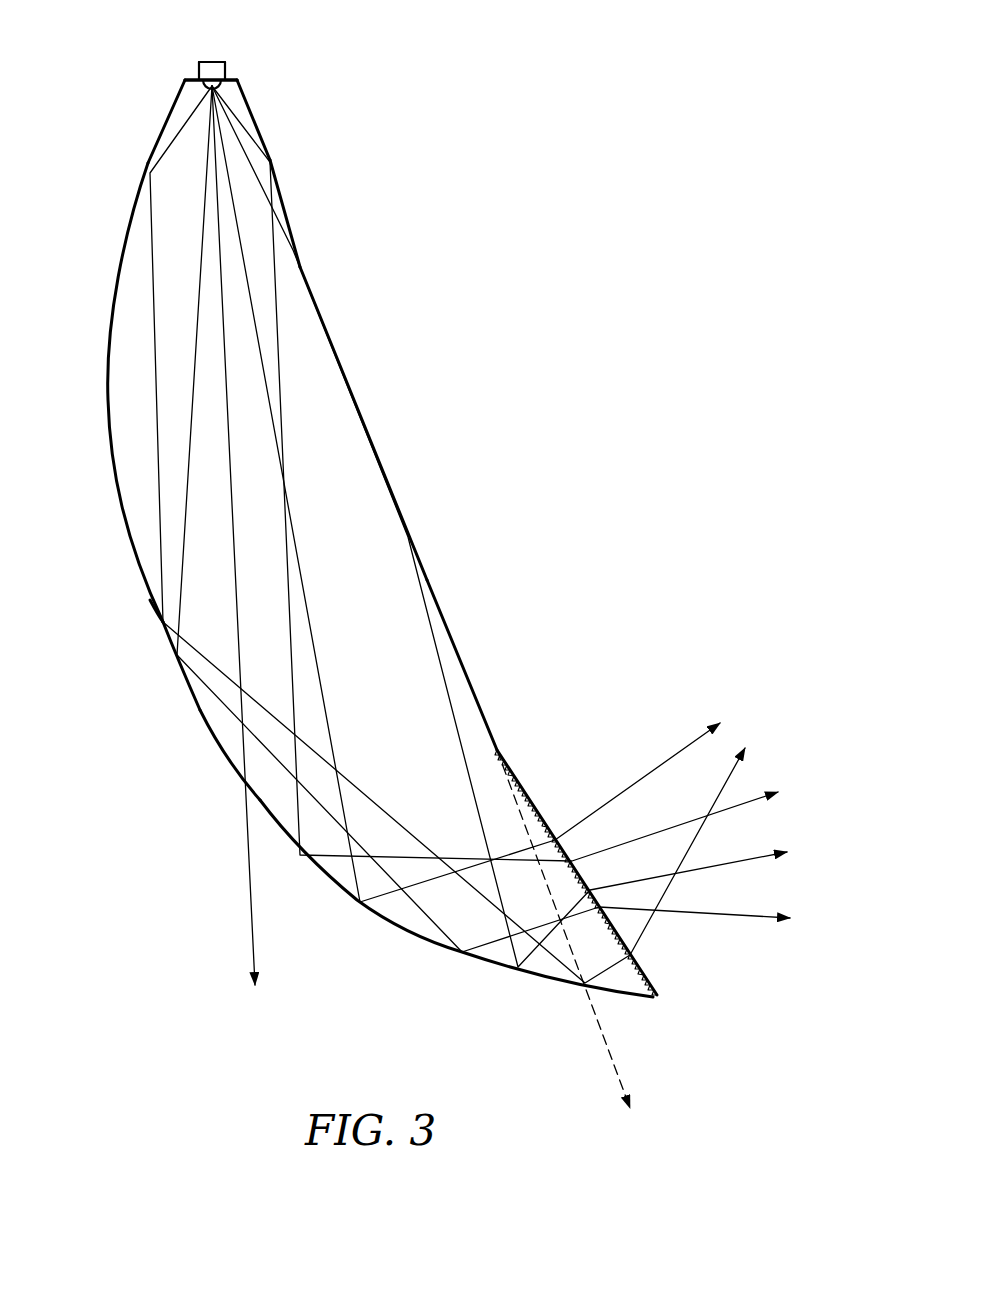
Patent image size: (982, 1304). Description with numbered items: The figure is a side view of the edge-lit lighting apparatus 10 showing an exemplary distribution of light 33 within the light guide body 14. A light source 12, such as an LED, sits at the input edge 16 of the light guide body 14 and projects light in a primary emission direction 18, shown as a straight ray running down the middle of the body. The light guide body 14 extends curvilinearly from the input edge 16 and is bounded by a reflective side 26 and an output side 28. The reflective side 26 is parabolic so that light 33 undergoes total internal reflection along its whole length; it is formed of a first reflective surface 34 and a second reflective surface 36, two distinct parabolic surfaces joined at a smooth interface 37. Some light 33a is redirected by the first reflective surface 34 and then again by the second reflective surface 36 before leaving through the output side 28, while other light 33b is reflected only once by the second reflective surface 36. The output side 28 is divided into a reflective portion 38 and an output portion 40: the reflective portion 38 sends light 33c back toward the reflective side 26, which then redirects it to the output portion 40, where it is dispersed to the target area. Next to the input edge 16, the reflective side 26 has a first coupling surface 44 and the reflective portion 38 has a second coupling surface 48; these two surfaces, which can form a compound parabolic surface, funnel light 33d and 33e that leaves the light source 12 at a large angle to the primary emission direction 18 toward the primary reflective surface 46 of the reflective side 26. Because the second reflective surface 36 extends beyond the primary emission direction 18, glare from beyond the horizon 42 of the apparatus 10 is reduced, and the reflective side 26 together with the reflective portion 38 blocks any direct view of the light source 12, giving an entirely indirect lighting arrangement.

The edge-lit lighting apparatus 10 is at (516, 183).
The light source 12 is at (213, 62).
The light guide body 14 is at (316, 305).
The input edge 16 is at (198, 78).
The primary emission direction 18 is at (252, 946).
The reflective side 26 is at (163, 654).
The output side 28 is at (416, 488).
The light 33 is at (722, 722).
The light 33a is at (200, 207).
The light 33b is at (290, 207).
The light 33c is at (297, 250).
The light 33d is at (148, 170).
The light 33e is at (270, 160).
The first reflective surface 34 is at (117, 520).
The second reflective surface 36 is at (405, 928).
The interface 37 is at (193, 697).
The reflective portion 38 is at (376, 452).
The output portion 40 is at (507, 770).
The horizon 42 is at (614, 1068).
The first coupling surface 44 is at (175, 100).
The primary reflective surface 46 is at (212, 735).
The second coupling surface 48 is at (247, 102).